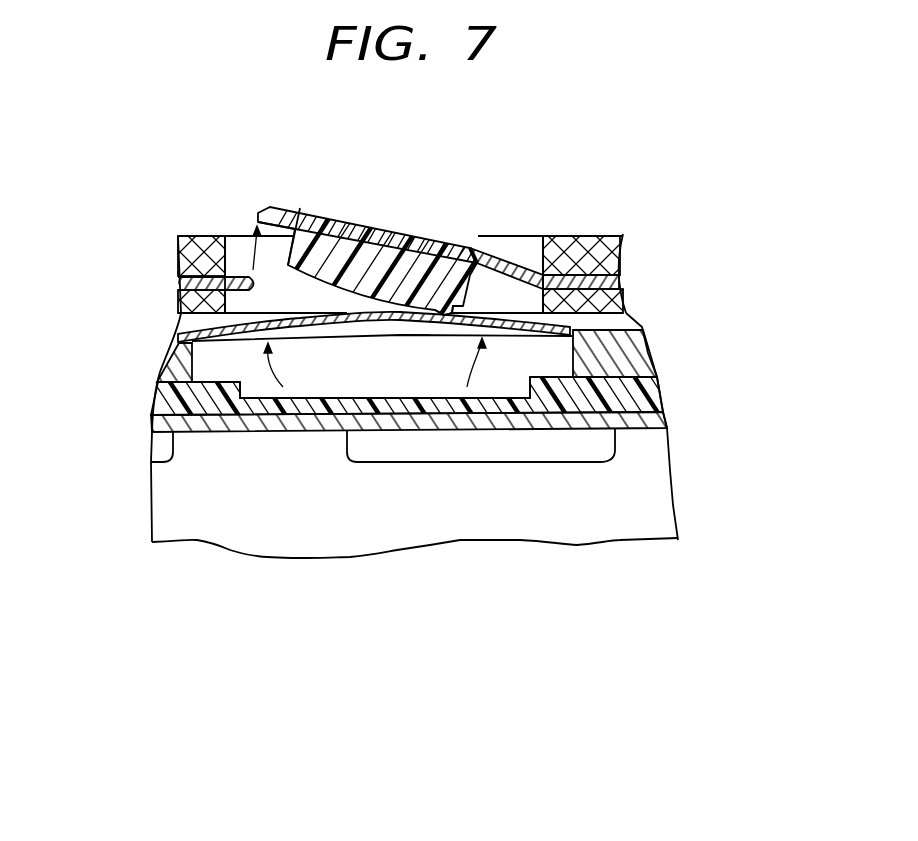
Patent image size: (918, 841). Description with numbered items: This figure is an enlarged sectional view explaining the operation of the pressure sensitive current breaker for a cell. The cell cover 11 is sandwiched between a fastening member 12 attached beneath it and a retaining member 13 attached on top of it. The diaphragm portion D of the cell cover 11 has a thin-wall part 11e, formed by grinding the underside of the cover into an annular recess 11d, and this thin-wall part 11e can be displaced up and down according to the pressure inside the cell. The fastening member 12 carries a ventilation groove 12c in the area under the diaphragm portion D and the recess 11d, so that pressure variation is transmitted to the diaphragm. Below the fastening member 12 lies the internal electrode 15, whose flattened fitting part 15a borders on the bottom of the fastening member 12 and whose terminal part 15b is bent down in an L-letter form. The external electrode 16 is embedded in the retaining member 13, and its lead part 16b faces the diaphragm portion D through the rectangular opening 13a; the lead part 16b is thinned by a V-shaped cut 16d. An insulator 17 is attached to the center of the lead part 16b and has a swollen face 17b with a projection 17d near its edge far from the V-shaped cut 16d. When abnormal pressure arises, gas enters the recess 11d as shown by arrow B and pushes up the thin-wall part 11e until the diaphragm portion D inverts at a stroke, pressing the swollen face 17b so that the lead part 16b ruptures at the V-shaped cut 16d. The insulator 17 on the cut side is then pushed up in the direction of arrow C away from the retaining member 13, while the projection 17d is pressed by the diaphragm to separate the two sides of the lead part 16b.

The cell cover 11 is at (450, 369).
The annular recess 11d is at (550, 350).
The thin-wall part 11e is at (530, 270).
The fastening member 12 is at (454, 507).
The ventilation groove 12c is at (340, 388).
The retaining member 13 is at (613, 230).
The opening 13a is at (514, 300).
The internal electrode 15 is at (449, 555).
The fitting part 15a is at (669, 416).
The terminal part 15b is at (638, 517).
The external electrode 16 is at (178, 281).
The lead part 16b is at (482, 266).
The V-shaped cut 16d is at (254, 279).
The insulator 17 is at (382, 409).
The swollen face 17b is at (338, 290).
The projection 17d is at (458, 306).
The arrow B is at (283, 367).
The arrow C is at (250, 262).
The diaphragm portion D is at (414, 306).